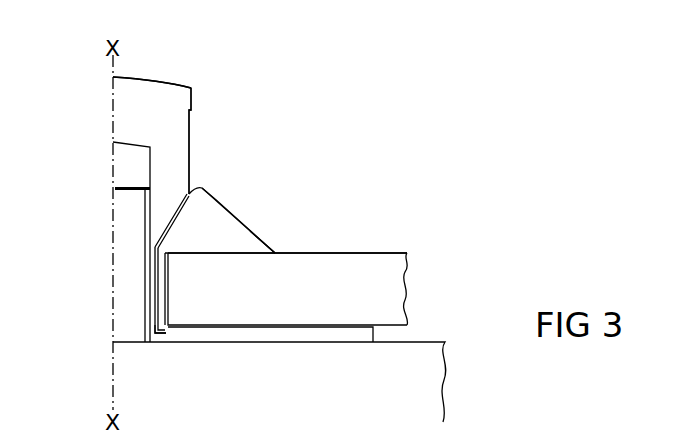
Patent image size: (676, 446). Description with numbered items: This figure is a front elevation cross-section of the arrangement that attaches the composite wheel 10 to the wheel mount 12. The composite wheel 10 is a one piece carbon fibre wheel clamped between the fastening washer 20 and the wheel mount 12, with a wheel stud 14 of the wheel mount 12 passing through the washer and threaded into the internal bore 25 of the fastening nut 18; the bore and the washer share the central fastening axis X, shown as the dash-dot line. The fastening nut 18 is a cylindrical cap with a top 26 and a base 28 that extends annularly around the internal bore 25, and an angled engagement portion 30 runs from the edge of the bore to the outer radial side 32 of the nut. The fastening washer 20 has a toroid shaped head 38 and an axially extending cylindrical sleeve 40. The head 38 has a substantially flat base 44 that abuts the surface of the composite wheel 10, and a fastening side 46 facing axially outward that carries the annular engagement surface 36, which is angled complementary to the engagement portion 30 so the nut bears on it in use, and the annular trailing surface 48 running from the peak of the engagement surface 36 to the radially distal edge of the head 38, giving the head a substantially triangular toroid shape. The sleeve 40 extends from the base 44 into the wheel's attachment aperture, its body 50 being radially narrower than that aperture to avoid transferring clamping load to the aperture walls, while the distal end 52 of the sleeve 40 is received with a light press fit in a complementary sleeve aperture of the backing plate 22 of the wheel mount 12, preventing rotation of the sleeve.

The composite wheel 10 is at (385, 287).
The wheel mount 12 is at (302, 400).
The wheel stud 14 is at (128, 283).
The fastening nut 18 is at (173, 103).
The fastening washer 20 is at (315, 237).
The backing plate 22 is at (350, 337).
The internal bore 25 is at (142, 159).
The top 26 is at (143, 78).
The base 28 is at (208, 155).
The engagement portion 30 is at (198, 208).
The outer radial side 32 is at (197, 117).
The engagement surface 36 is at (172, 212).
The head 38 is at (218, 227).
The sleeve 40 is at (157, 305).
The base 44 is at (237, 256).
The fastening side 46 is at (337, 168).
The trailing surface 48 is at (273, 238).
The body 50 is at (157, 268).
The distal end 52 is at (158, 337).